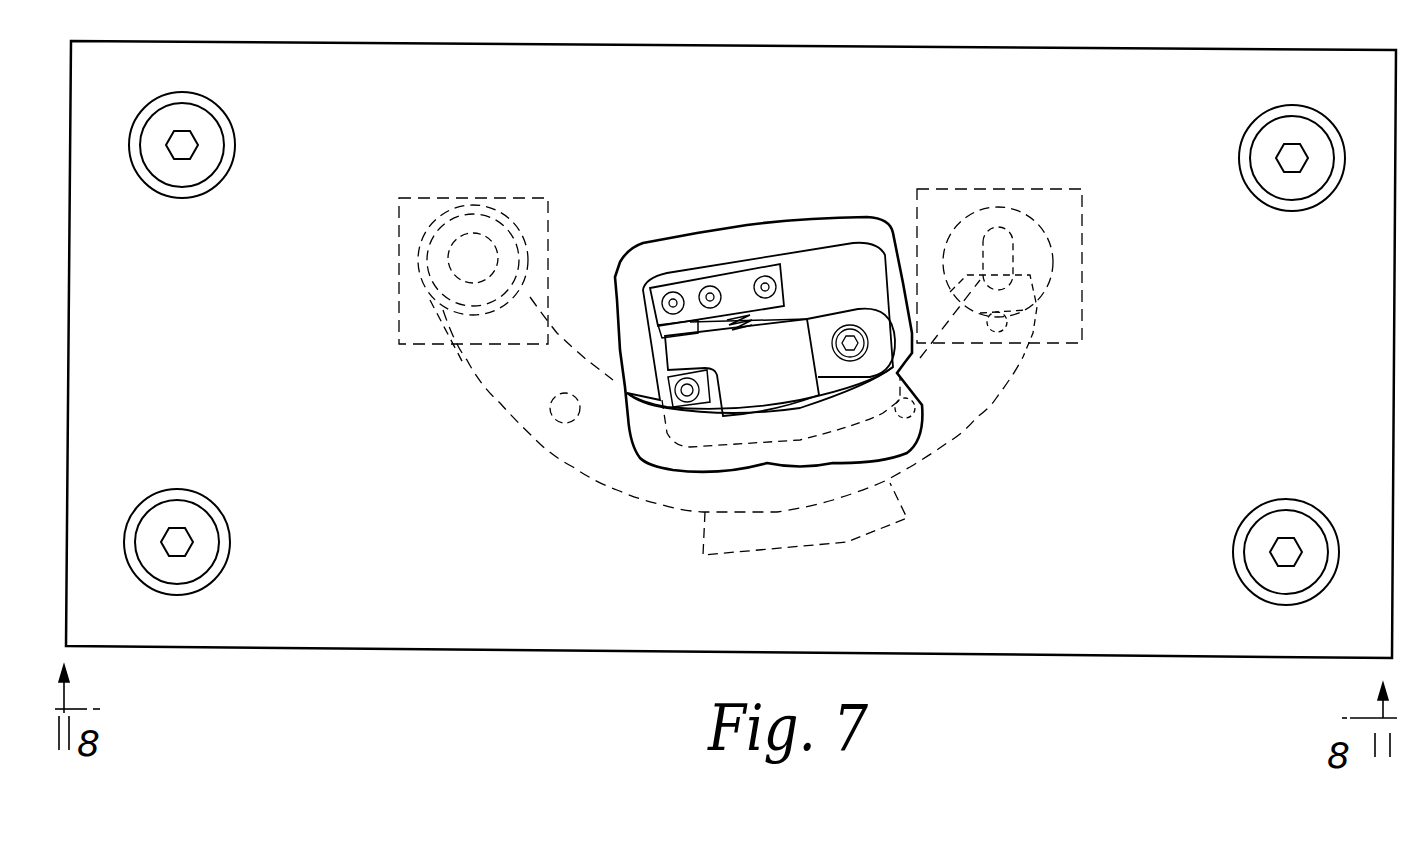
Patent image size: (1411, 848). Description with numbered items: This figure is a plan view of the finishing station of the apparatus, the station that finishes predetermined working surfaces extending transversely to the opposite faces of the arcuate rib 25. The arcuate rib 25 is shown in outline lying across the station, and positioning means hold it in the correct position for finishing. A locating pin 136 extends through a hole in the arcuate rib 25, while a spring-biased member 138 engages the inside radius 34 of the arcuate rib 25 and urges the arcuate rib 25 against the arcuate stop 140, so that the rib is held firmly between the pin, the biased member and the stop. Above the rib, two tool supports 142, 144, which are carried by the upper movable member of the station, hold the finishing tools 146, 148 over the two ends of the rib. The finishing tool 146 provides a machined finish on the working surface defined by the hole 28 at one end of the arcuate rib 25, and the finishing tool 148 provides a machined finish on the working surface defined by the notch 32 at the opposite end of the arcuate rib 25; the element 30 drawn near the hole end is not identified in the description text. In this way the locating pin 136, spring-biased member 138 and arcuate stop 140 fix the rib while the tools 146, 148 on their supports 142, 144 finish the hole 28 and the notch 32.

The arcuate rib 25 is at (975, 417).
The hole 28 is at (470, 280).
The lever arm 30 is at (490, 230).
The notch 32 is at (990, 287).
The inside radius 34 is at (847, 392).
The locating pin 136 is at (550, 407).
The spring-biased member 138 is at (773, 357).
The arcuate stop 140 is at (853, 543).
The tool support 142 is at (548, 220).
The tool support 144 is at (1082, 305).
The finishing tool 146 is at (455, 245).
The finishing tool 148 is at (1013, 242).